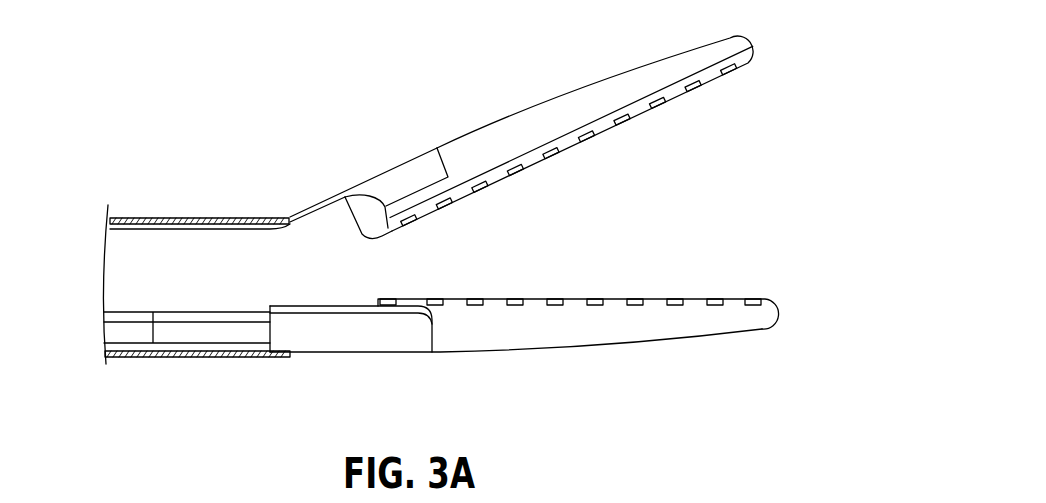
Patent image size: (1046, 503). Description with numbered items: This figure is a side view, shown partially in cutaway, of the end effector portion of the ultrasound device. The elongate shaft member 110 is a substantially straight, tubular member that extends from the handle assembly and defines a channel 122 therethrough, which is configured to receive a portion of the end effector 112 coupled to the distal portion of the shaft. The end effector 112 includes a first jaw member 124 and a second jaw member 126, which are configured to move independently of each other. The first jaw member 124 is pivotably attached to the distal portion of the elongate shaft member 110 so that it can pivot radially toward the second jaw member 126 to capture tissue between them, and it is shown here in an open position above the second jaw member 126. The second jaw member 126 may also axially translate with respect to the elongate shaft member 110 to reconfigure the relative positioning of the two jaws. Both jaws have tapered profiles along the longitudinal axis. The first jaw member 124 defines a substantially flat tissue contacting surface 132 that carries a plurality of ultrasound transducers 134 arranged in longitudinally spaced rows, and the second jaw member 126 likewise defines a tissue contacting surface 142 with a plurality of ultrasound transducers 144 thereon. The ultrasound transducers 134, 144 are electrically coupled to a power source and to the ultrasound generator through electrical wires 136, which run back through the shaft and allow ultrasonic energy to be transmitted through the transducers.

The elongate shaft member 110 is at (130, 146).
The end effector 112 is at (336, 76).
The channel 122 is at (248, 240).
The first jaw member 124 is at (531, 95).
The second jaw member 126 is at (438, 373).
The tissue contacting surface 132 is at (557, 130).
The ultrasound transducers 134 is at (693, 70).
The electrical wires 136 is at (143, 229).
The tissue contacting surface 142 is at (541, 319).
The ultrasound transducers 144 is at (750, 307).